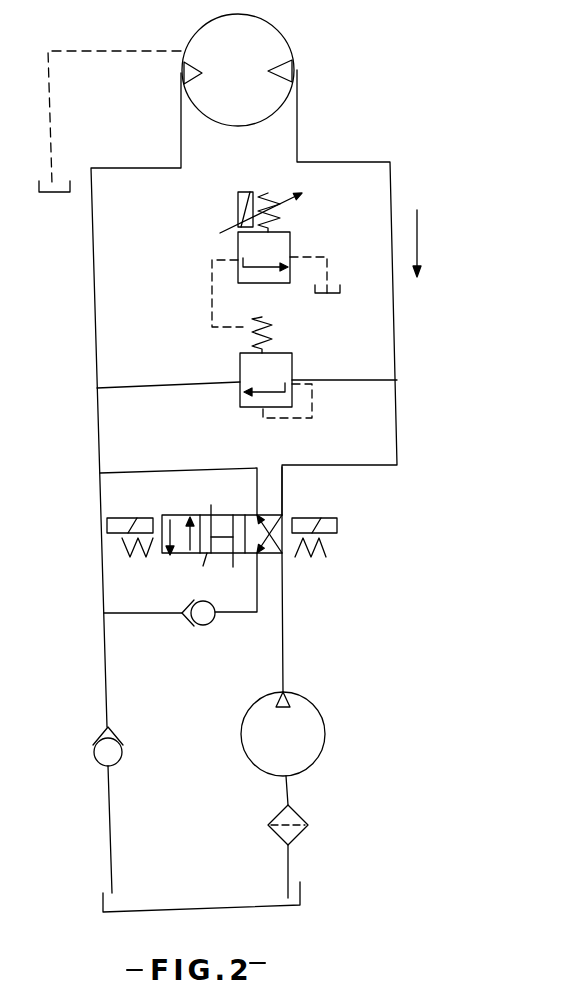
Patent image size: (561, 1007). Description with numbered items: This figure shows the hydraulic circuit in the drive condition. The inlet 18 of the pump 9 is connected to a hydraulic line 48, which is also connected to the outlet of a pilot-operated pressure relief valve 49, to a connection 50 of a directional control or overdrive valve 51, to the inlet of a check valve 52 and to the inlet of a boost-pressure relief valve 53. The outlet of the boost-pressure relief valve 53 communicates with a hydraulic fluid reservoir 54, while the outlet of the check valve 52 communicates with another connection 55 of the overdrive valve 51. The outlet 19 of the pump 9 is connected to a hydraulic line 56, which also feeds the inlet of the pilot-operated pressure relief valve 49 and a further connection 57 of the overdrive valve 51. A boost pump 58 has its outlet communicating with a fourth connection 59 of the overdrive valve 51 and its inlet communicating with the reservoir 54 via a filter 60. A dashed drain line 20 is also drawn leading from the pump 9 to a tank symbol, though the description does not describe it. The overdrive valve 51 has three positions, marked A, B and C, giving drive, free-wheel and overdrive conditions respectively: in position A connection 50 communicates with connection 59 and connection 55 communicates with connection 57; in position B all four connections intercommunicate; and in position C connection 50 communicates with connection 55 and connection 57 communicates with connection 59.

The pump 9 is at (262, 40).
The inlet 18 is at (183, 73).
The outlet 19 is at (294, 70).
The drain line 20 is at (181, 50).
The hydraulic line 48 is at (131, 168).
The pilot-operated pressure relief valve 49 is at (272, 361).
The connection 50 is at (257, 508).
The directional control or overdrive valve 51 is at (204, 562).
The check valve 52 is at (203, 626).
The boost-pressure relief valve 53 is at (115, 752).
The hydraulic fluid reservoir 54 is at (100, 906).
The connection 55 is at (257, 568).
The hydraulic line 56 is at (362, 162).
The connection 57 is at (282, 505).
The boost pump 58 is at (316, 728).
The fourth connection 59 is at (282, 560).
The filter 60 is at (303, 818).